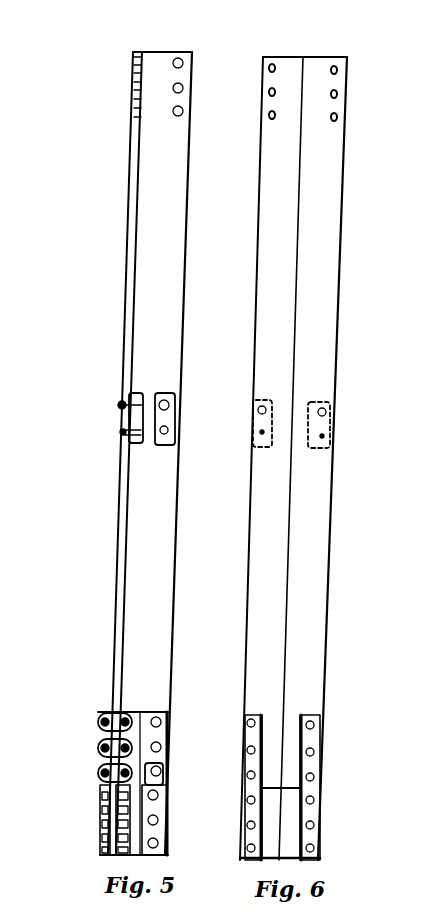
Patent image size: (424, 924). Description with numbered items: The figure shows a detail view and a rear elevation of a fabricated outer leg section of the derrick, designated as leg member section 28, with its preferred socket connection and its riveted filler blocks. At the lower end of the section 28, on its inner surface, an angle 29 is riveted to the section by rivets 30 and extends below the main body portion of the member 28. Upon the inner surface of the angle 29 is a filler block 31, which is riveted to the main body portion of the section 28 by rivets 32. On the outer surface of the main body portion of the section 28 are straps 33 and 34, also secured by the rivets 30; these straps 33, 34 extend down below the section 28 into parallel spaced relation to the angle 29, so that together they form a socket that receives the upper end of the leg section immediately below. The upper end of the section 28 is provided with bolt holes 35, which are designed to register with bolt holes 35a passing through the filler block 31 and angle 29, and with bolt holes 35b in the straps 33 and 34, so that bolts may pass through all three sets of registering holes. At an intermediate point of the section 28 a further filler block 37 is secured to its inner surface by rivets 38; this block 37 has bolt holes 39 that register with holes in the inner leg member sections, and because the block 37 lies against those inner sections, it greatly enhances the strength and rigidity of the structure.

In FIG. 5, the leg member section 28 is at (160, 270).
In FIG. 6, the leg member section 28 is at (320, 278).
In FIG. 5, the angle 29 is at (142, 718).
In FIG. 5, the rivet 30 is at (162, 723).
In FIG. 5, the filler block 31 is at (162, 784).
In FIG. 5, the rivet 32 is at (163, 768).
In FIG. 5, the strap 33 is at (100, 786).
In FIG. 6, the strap 33 is at (318, 790).
In FIG. 6, the strap 34 is at (248, 790).
In FIG. 5, the bolt hole 35 is at (185, 62).
In FIG. 5, the bolt hole 35a is at (163, 820).
In FIG. 5, the bolt hole 35b is at (100, 814).
In FIG. 6, the bolt hole 35b is at (245, 848).
In FIG. 5, the filler block 37 is at (170, 407).
In FIG. 5, the rivet 38 is at (120, 404).
In FIG. 5, the bolt hole 39 is at (120, 433).